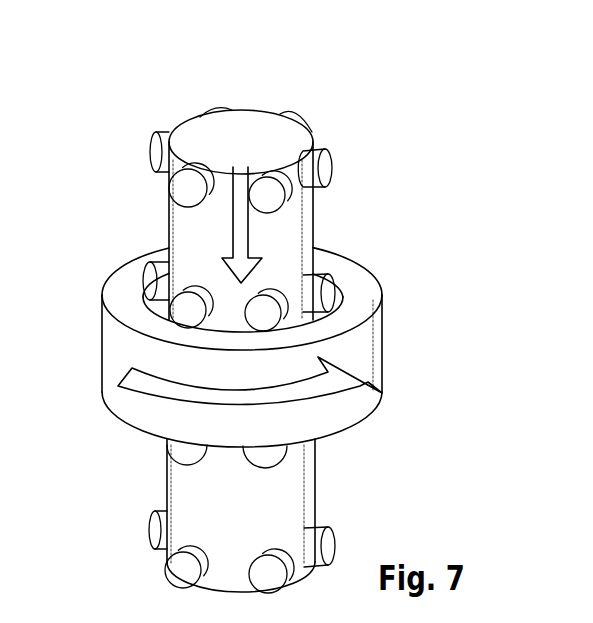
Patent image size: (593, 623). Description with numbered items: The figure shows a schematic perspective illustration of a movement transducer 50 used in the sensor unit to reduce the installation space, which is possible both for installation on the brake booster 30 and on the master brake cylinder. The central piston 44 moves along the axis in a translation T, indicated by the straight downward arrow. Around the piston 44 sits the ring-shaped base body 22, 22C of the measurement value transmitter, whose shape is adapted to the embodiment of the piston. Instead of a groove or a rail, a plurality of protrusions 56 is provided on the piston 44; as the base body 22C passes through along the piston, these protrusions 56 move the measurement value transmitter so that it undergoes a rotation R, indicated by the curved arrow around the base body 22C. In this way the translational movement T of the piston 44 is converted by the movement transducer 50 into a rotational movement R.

The movement transducer 50 is at (95, 68).
The brake booster 30 is at (224, 182).
The piston 44 is at (203, 135).
The base body 22 is at (310, 347).
The base body 22C is at (372, 338).
The protrusions 56 is at (328, 170).
The translation T is at (243, 172).
The rotation R is at (156, 392).